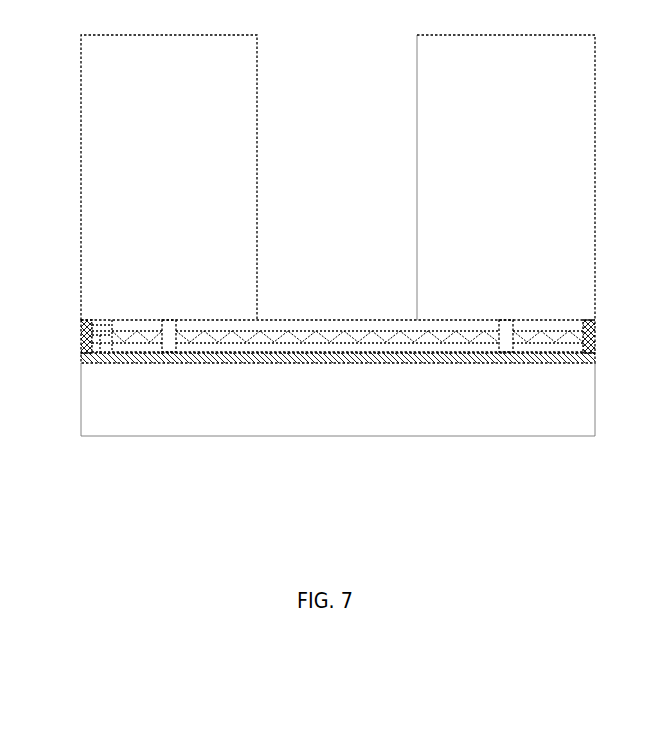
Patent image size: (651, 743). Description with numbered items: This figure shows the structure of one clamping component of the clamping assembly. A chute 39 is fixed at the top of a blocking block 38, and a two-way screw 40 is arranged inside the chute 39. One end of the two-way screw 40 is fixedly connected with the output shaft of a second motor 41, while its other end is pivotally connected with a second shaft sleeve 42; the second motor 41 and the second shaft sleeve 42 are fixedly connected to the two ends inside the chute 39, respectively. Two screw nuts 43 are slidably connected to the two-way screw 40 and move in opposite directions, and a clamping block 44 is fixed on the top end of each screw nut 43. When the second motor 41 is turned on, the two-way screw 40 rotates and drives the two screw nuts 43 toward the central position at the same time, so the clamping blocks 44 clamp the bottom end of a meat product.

The blocking block 38 is at (350, 412).
The chute 39 is at (84, 335).
The two-way screw 40 is at (237, 342).
The second motor 41 is at (99, 336).
The second shaft sleeve 42 is at (558, 337).
The screw nut 43 is at (503, 343).
The clamping block 44 is at (120, 205).